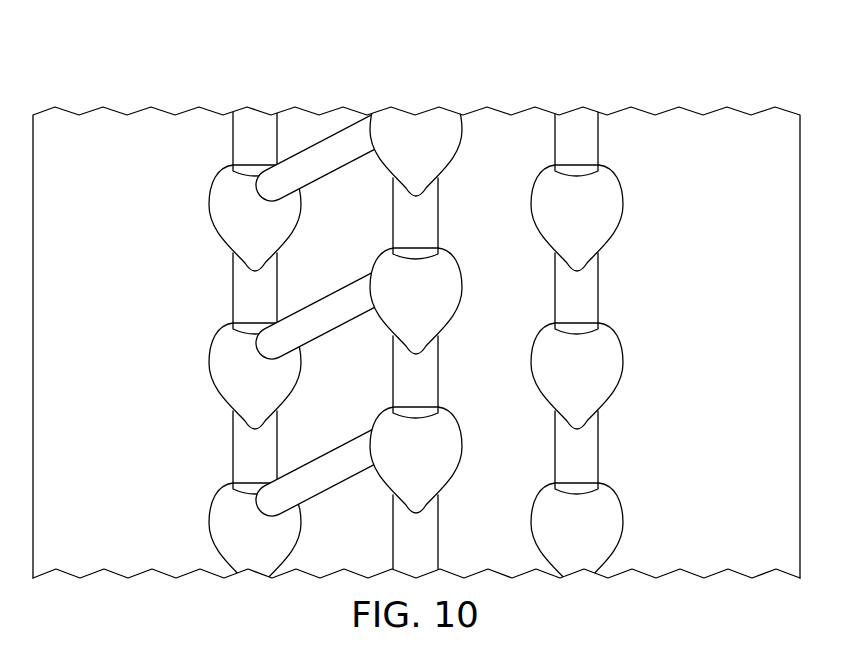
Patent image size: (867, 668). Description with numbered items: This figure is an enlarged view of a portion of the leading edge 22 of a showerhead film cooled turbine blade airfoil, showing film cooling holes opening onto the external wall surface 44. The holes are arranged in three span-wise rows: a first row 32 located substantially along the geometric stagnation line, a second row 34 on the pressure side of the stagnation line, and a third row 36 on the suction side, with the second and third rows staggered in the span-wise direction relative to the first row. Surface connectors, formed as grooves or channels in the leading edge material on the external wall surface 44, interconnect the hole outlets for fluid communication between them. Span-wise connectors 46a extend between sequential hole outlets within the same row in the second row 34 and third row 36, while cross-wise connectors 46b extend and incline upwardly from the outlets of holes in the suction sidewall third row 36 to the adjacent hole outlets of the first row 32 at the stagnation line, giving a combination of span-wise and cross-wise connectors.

The leading edge 22 is at (696, 86).
The first row 32 is at (423, 101).
The second row 34 is at (577, 101).
The third row 36 is at (262, 101).
The external wall surface 44 is at (760, 564).
The span-wise connectors 46a is at (233, 139).
The cross-wise connectors 46b is at (332, 288).